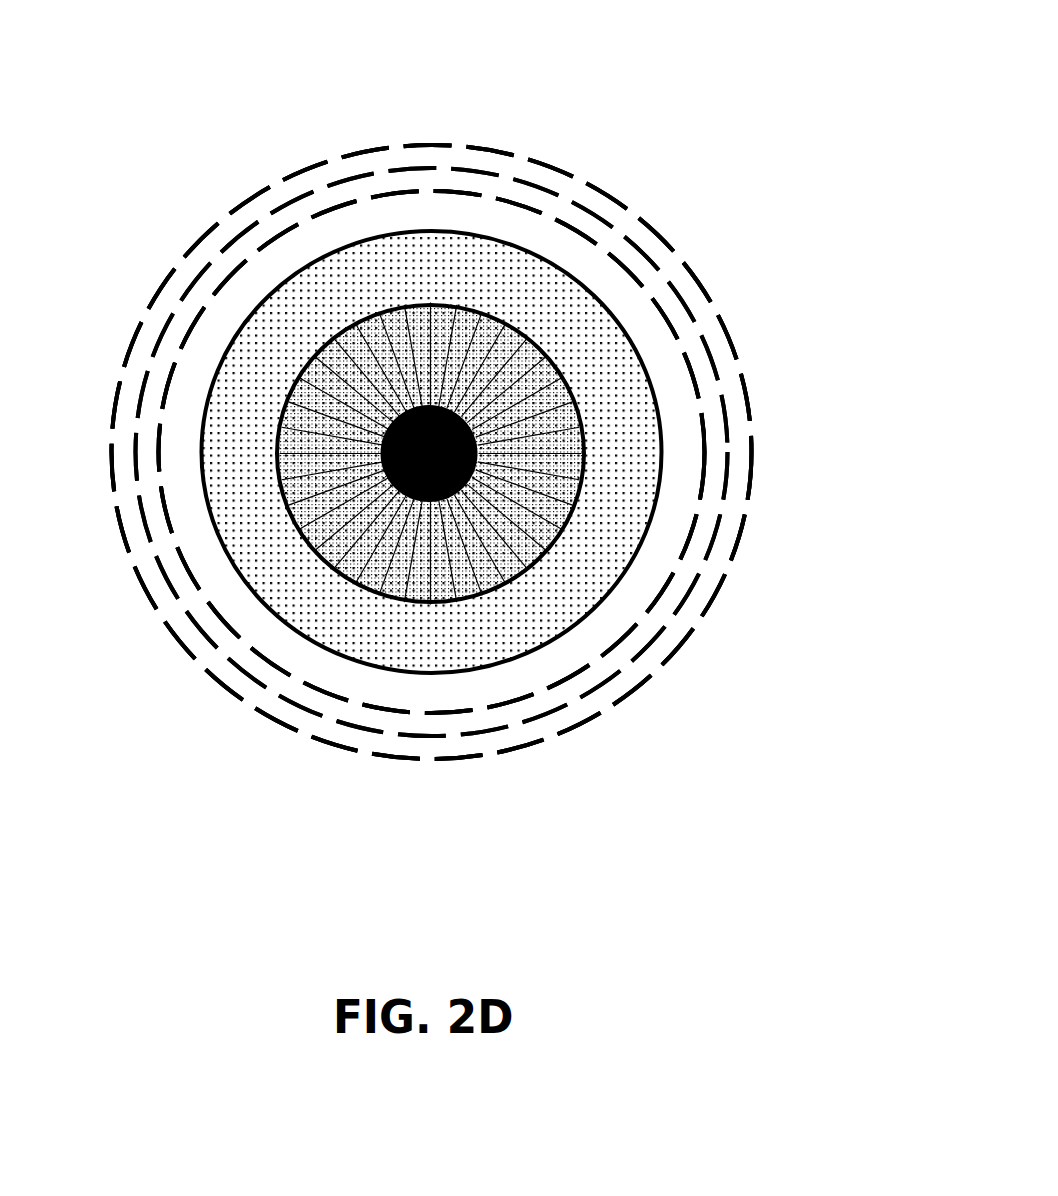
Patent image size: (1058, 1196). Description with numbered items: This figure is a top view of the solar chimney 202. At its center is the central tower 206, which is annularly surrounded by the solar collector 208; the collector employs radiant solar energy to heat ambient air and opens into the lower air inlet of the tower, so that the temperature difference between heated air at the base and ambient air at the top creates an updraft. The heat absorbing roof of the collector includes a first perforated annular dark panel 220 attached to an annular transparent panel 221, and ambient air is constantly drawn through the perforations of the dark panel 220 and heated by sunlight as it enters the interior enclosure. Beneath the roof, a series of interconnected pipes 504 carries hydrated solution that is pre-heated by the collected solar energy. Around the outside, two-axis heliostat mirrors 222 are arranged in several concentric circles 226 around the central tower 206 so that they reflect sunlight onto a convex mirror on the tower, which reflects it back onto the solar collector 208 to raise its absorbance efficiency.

The solar chimney 202 is at (718, 72).
The central tower 206 is at (452, 470).
The solar collector 208 is at (655, 331).
The first perforated annular dark panel 220 is at (590, 590).
The annular transparent panel 221 is at (304, 512).
The two-axis heliostat mirrors 222 is at (738, 550).
The concentric circles 226 is at (183, 337).
The series of interconnected pipes 504 is at (480, 545).